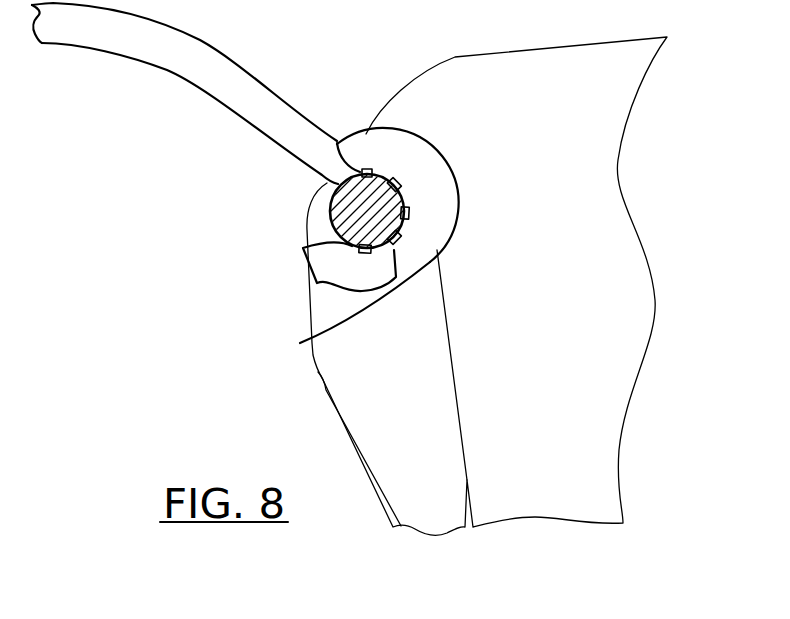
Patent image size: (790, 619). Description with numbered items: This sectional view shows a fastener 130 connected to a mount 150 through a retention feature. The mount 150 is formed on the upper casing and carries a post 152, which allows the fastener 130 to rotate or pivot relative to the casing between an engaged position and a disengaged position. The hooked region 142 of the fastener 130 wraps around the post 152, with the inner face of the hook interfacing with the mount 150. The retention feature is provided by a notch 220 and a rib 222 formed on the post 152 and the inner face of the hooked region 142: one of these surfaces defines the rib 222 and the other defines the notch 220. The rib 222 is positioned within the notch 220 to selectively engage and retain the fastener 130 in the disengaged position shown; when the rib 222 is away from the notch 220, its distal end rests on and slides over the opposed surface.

The fastener 130 is at (103, 32).
The hooked region 142 is at (390, 157).
The mount 150 is at (452, 186).
The post 152 is at (355, 218).
The notch 220 is at (300, 343).
The rib 222 is at (337, 141).